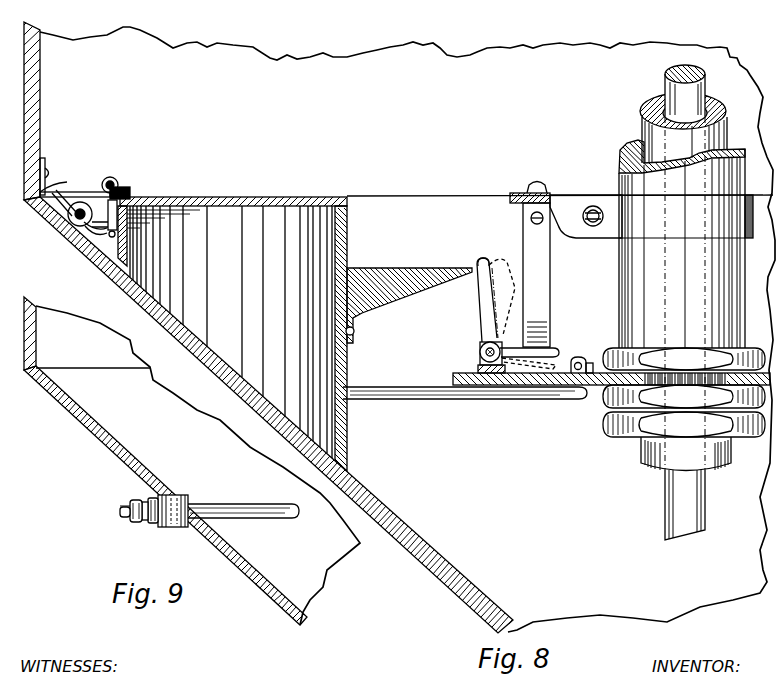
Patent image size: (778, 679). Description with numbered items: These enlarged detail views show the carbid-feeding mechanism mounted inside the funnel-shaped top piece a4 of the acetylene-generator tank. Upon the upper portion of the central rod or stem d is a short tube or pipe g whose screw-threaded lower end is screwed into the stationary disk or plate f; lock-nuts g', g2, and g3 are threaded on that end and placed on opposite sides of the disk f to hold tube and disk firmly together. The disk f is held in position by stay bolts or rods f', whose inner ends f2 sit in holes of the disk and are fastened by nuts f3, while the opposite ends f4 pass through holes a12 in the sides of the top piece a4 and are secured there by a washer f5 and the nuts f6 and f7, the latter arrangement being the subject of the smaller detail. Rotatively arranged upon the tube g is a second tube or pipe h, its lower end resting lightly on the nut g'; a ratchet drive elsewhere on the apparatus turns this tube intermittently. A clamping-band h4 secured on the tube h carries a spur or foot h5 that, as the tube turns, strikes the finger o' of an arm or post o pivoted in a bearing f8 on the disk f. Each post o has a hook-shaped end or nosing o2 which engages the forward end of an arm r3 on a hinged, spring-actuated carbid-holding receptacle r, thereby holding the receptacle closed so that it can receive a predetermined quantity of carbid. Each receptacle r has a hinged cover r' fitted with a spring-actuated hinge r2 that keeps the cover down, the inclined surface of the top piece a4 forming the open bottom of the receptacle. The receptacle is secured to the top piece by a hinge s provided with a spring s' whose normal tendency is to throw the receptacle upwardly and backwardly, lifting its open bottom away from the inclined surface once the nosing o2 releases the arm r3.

In FIG. 8, the funnel-shaped top piece a4 is at (268, 327).
In FIG. 9, the funnel-shaped top piece a4 is at (257, 582).
In FIG. 9, the holes a12 is at (188, 502).
In FIG. 8, the rod or stem d is at (666, 86).
In FIG. 8, the short tube or pipe g is at (669, 298).
In FIG. 8, the lock-nut g' is at (686, 345).
In FIG. 8, the lock-nut g2 is at (604, 402).
In FIG. 8, the lock-nut g3 is at (622, 433).
In FIG. 8, the second tube or pipe h is at (625, 170).
In FIG. 8, the clamping-band h4 is at (622, 207).
In FIG. 8, the spur or foot h5 is at (543, 274).
In FIG. 8, the arm or post o is at (484, 292).
In FIG. 8, the finger o' is at (537, 337).
In FIG. 8, the hook-shaped end or nosing o2 is at (478, 263).
In FIG. 8, the disk or plate f is at (600, 368).
In FIG. 8, the stay bolts or rods f' is at (465, 404).
In FIG. 9, the stay bolts or rods f' is at (209, 499).
In FIG. 8, the ends of stay-rods f2 is at (574, 360).
In FIG. 8, the nuts f3 is at (588, 364).
In FIG. 9, the opposite ends of stay-rods f4 is at (130, 509).
In FIG. 9, the washer f5 is at (155, 524).
In FIG. 9, the nut f6 is at (145, 522).
In FIG. 9, the nut f7 is at (125, 519).
In FIG. 8, the bearing f8 is at (480, 358).
In FIG. 8, the carbid-holding receptacle r is at (232, 338).
In FIG. 8, the hinged cover r' is at (233, 186).
In FIG. 8, the spring-actuated hinge r2 is at (120, 174).
In FIG. 8, the arm r3 is at (397, 274).
In FIG. 8, the hinge s is at (78, 197).
In FIG. 8, the spring s' is at (64, 222).